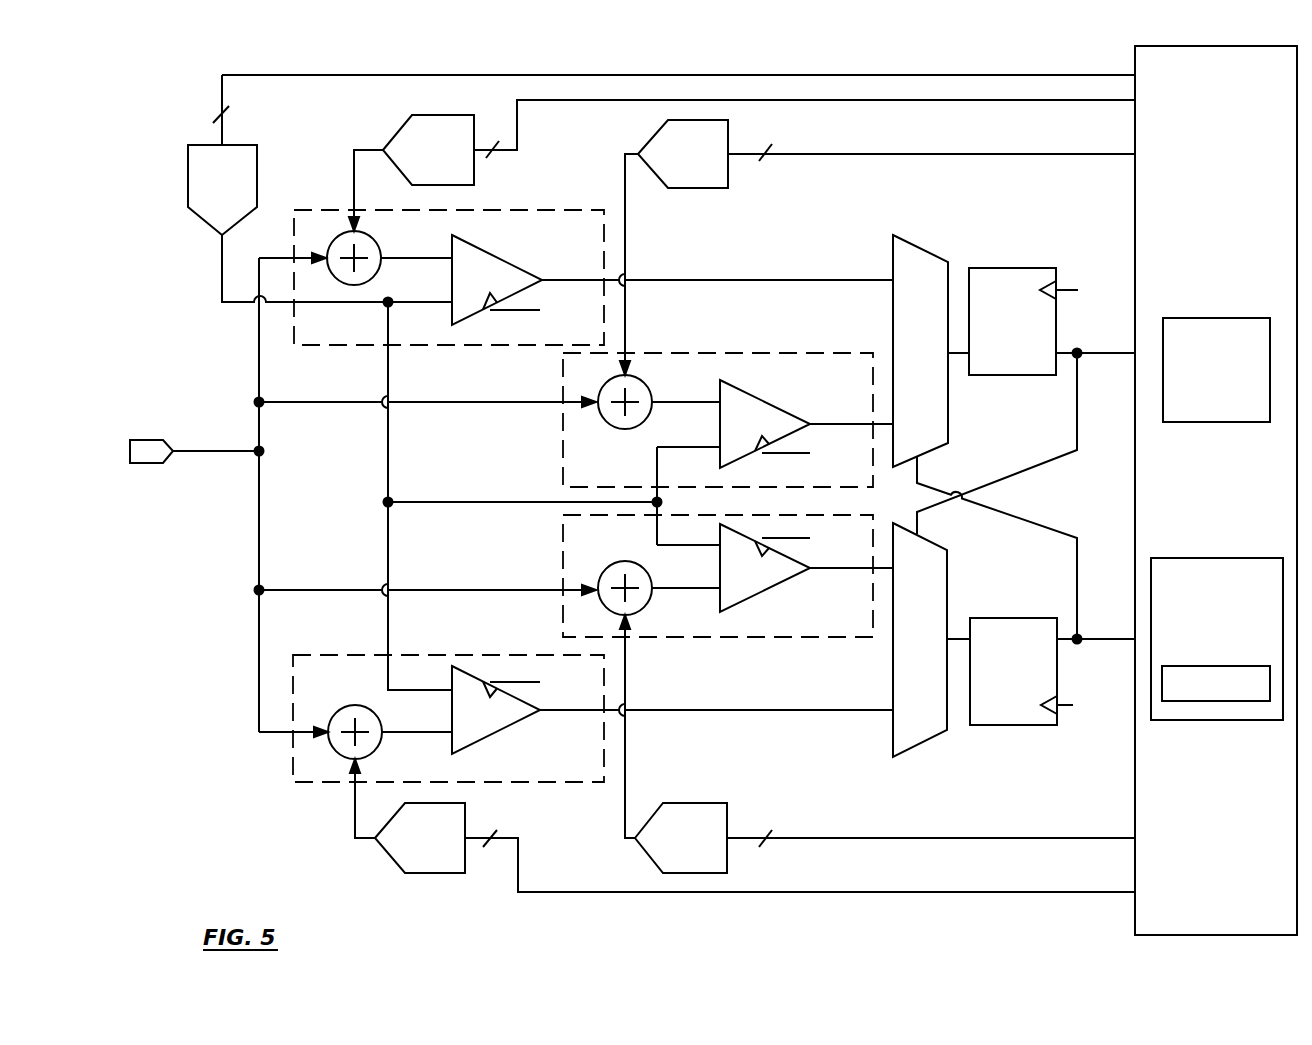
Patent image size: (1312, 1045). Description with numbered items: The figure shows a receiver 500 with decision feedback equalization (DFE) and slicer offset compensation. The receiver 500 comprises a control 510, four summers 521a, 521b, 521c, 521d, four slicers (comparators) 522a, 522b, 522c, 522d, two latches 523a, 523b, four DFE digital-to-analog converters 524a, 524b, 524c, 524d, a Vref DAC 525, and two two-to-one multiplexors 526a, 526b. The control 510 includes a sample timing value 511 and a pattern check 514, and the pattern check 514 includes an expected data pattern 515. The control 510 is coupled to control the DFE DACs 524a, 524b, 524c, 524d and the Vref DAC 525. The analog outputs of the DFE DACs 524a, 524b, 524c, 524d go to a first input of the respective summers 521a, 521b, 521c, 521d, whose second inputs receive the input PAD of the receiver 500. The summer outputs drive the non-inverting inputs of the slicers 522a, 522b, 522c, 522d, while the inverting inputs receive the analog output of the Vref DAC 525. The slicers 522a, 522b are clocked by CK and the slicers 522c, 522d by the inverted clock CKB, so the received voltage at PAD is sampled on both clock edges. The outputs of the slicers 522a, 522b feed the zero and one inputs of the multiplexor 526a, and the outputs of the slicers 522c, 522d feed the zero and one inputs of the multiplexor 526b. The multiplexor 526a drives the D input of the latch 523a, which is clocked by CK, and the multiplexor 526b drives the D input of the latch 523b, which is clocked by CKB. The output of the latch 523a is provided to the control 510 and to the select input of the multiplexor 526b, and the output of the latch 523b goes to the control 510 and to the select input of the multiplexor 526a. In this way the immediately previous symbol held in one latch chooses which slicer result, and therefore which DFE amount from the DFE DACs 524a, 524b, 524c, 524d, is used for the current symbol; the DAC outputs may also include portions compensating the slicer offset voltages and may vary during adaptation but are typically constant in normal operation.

The receiver 500 is at (586, 383).
The control 510 is at (1196, 520).
The sample timing value 511 is at (1196, 410).
The pattern check 514 is at (1197, 646).
The expected data pattern 515 is at (1196, 697).
The summer 521a is at (397, 249).
The summer 521b is at (667, 394).
The summer 521c is at (666, 599).
The summer 521d is at (396, 742).
The slicer 522a is at (492, 275).
The slicer 522b is at (759, 419).
The slicer 522c is at (764, 571).
The slicer 522d is at (494, 714).
The latch 523a is at (1026, 305).
The latch 523b is at (1022, 687).
The DFE digital-to-analog converter 524a is at (417, 176).
The DFE digital-to-analog converter 524b is at (672, 181).
The DFE digital-to-analog converter 524c is at (669, 864).
The DFE digital-to-analog converter 524d is at (409, 864).
The Vref DAC 525 is at (199, 156).
The 2:1 multiplexor 526a is at (877, 336).
The 2:1 multiplexor 526b is at (877, 654).